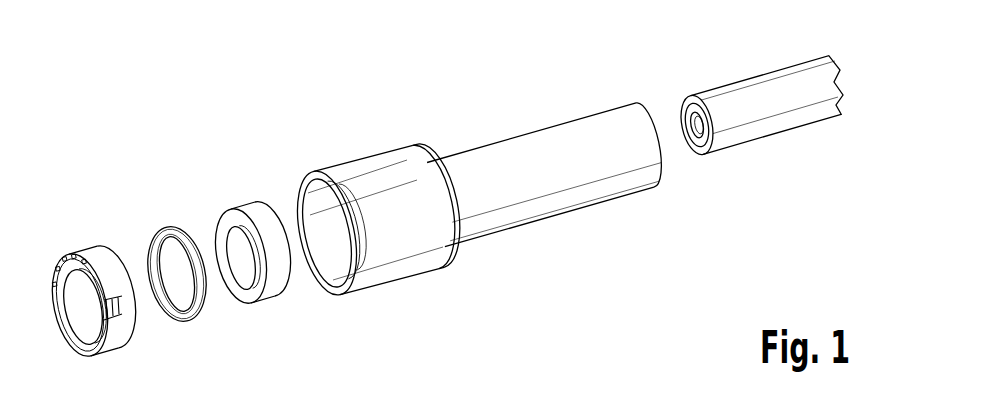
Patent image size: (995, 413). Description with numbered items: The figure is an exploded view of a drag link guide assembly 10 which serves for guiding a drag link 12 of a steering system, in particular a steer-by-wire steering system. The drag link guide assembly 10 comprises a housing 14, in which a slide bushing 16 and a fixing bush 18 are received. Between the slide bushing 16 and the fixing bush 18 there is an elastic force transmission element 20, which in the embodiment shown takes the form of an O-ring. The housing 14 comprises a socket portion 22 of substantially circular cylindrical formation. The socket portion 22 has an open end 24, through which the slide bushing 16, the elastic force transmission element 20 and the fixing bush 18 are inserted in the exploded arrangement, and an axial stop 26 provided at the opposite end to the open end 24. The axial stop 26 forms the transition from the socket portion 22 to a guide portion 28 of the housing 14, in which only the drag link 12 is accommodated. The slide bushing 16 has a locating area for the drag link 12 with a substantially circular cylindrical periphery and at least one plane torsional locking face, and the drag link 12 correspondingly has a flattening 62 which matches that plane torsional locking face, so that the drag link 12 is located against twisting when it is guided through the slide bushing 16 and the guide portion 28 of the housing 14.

The drag link guide assembly 10 is at (443, 186).
The drag link 12 is at (755, 98).
The housing 14 is at (544, 151).
The slide bushing 16 is at (248, 209).
The fixing bush 18 is at (90, 262).
The elastic force transmission element 20 is at (165, 228).
The socket portion 22 is at (402, 213).
The open end 24 is at (337, 252).
The axial stop 26 is at (457, 222).
The guide portion 28 is at (560, 190).
The flattening 62 is at (727, 97).